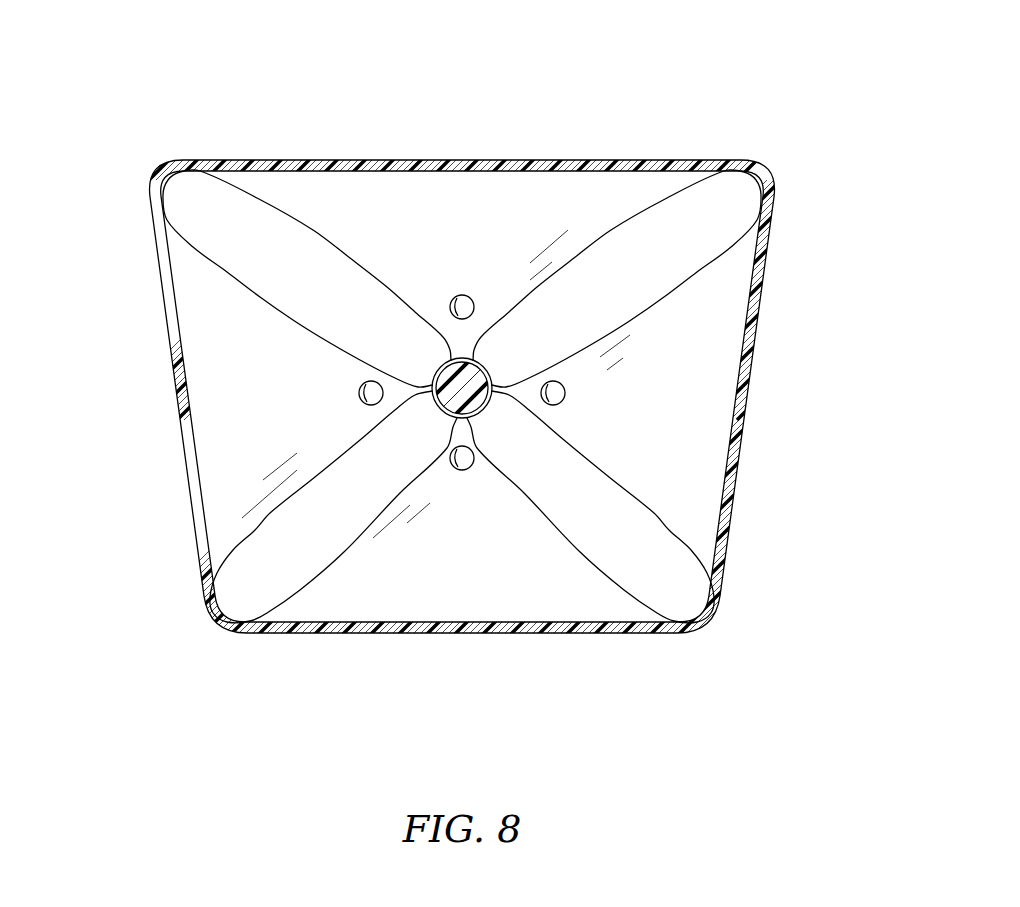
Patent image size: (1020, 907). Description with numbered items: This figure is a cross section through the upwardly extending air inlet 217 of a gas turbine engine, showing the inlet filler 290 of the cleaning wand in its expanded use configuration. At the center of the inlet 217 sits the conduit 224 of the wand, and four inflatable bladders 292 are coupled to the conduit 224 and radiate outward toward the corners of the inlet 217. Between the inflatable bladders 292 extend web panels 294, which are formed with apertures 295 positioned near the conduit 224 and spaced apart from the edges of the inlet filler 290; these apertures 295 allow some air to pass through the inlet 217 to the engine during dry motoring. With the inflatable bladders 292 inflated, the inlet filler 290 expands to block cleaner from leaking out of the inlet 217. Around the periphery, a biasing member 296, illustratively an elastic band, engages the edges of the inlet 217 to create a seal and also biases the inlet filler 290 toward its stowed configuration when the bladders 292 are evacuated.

The inlet filler 290 is at (668, 150).
The air inlet 217 is at (266, 634).
The biasing member 296 is at (729, 361).
The inflatable bladders 292 is at (233, 264).
The web panels 294 is at (404, 194).
The conduit 224 is at (472, 339).
The apertures 295 is at (453, 298).